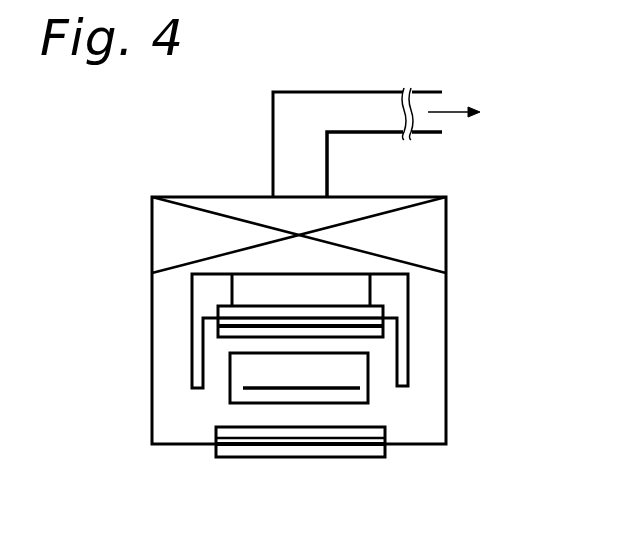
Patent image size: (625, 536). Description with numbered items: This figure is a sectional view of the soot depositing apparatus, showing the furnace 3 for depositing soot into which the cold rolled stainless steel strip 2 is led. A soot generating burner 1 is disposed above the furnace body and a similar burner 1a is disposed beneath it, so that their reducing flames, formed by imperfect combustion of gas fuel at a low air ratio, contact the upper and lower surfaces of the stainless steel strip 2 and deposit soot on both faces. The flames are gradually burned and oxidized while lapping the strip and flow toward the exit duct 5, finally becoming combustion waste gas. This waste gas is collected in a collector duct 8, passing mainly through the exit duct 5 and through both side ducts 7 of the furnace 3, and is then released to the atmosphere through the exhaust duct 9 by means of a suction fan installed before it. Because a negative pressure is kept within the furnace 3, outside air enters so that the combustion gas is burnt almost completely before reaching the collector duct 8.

The soot generating burner 1 is at (228, 330).
The soot generating burner 1a is at (292, 457).
The cold rolled stainless steel strip 2 is at (343, 390).
The furnace for depositing soot 3 is at (212, 400).
The exit duct 5 is at (323, 290).
The side ducts 7 is at (167, 305).
The collector duct 8 is at (297, 217).
The exhaust duct 9 is at (350, 107).